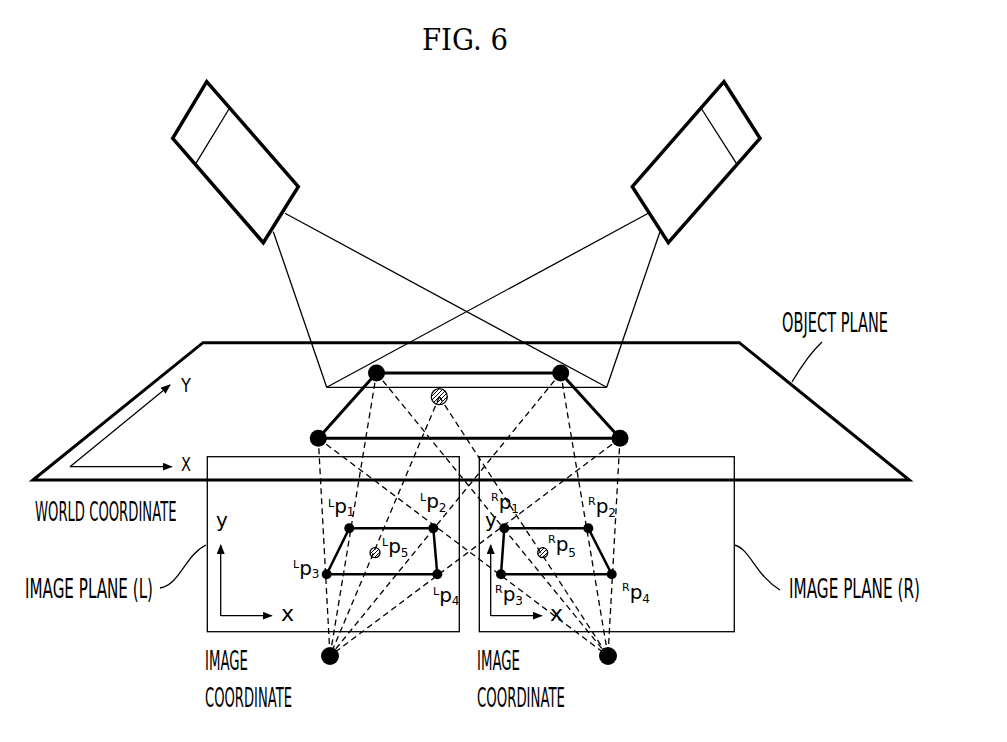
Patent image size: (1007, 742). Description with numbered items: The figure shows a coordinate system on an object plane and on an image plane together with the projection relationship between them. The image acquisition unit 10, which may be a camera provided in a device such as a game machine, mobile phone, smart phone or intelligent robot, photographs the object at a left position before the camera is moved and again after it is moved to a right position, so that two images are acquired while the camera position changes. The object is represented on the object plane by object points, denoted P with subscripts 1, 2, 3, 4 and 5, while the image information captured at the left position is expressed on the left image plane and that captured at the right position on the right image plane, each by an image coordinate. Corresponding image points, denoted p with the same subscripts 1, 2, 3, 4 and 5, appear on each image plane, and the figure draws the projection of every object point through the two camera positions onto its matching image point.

The image acquisition unit 10 is at (262, 150).
The object point P1 1 is at (367, 362).
The object point P2 2 is at (571, 362).
The object point P3 3 is at (306, 434).
The object point P4 4 is at (633, 434).
The object point P5 5 is at (453, 401).